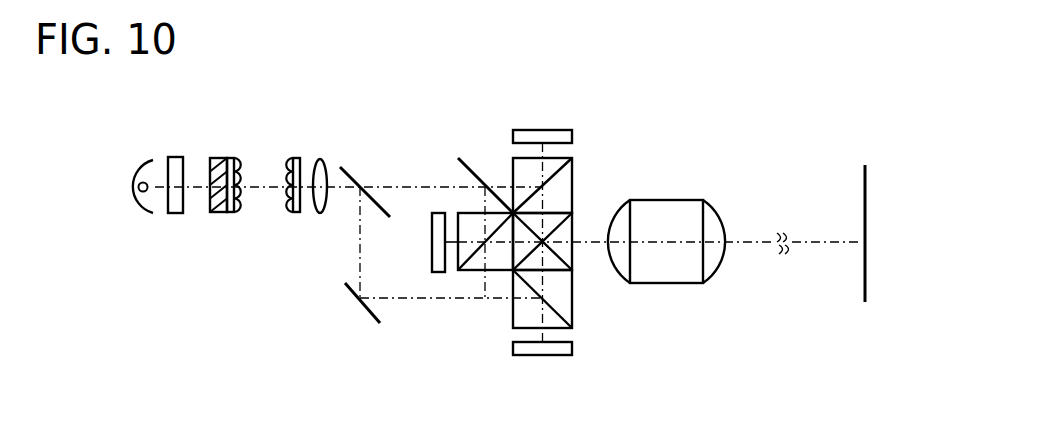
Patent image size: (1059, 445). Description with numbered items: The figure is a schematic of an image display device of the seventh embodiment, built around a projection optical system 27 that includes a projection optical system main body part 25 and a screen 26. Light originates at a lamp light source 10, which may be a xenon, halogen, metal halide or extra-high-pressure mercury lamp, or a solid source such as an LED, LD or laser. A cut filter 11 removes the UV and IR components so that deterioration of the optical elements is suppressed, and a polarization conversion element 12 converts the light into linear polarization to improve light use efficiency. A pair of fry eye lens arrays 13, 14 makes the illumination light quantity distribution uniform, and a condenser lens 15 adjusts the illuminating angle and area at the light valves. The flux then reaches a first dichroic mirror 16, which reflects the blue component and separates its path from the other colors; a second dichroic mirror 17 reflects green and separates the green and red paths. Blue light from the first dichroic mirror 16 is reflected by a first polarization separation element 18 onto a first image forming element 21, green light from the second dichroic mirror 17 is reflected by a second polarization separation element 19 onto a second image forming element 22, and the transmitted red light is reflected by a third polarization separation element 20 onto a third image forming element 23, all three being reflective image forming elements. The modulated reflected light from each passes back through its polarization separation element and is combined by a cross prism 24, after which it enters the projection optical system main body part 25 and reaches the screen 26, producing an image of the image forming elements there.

The lamp light source 10 is at (118, 182).
The cut filter 11 is at (175, 213).
The polarization conversion element 12 is at (219, 158).
The fry eye lens array 13 is at (238, 213).
The fry eye lens array 14 is at (293, 213).
The condenser lens 15 is at (320, 161).
The first dichroic mirror 16 is at (358, 176).
The second dichroic mirror 17 is at (475, 170).
The first polarization separation element 18 is at (572, 320).
The second polarization separation element 19 is at (480, 268).
The third polarization separation element 20 is at (572, 166).
The first image forming element 21 is at (552, 355).
The second image forming element 22 is at (432, 263).
The third image forming element 23 is at (542, 130).
The cross prism 24 is at (572, 222).
The projection optical system main body part 25 is at (672, 283).
The screen 26 is at (866, 290).
The projection optical system 27 is at (882, 330).